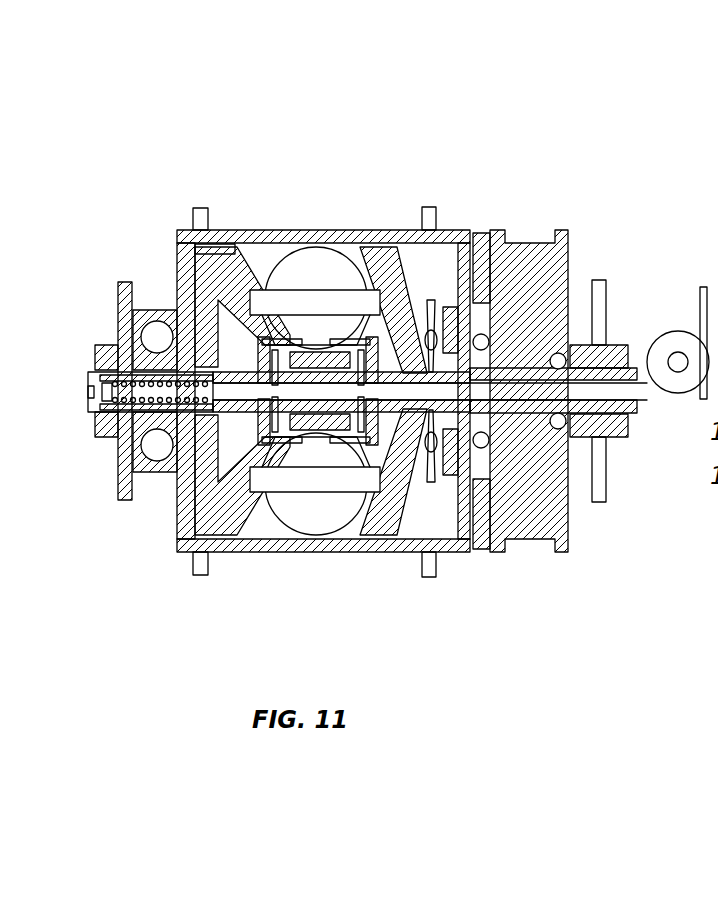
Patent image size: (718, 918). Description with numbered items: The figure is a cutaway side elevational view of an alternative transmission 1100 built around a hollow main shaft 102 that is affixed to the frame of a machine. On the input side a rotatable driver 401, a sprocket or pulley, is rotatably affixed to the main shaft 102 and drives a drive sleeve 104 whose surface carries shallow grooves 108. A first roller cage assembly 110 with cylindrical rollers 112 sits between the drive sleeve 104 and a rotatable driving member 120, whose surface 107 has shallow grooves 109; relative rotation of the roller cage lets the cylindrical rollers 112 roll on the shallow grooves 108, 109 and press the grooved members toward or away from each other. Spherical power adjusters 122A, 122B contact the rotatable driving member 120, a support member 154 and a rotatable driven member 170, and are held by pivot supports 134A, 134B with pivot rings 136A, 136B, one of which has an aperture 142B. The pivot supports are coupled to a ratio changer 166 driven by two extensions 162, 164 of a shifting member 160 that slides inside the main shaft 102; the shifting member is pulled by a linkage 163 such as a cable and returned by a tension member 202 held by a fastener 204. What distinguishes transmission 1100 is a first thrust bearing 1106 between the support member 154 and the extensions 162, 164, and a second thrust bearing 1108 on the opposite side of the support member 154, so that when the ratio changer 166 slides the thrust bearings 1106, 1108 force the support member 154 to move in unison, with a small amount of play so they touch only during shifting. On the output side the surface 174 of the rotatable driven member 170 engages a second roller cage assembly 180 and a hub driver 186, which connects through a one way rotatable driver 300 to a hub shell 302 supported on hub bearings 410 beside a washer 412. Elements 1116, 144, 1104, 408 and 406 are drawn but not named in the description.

The transmission 1100 is at (232, 118).
The rotatable driving member 120 is at (400, 240).
The one way rotatable driver 300 is at (200, 250).
The hub shell 302 is at (306, 248).
The rotatable driver 401 is at (540, 243).
The seal 1116 is at (466, 250).
The shallow grooves 109 is at (476, 335).
The wedge 144 is at (378, 262).
The surface 107 is at (432, 300).
The second thrust bearing 1108 is at (445, 310).
The rotatable driven member 170 is at (270, 270).
The spherical power adjuster 122A is at (335, 275).
The spherical power adjuster 122B is at (305, 495).
The pivot support 134A is at (252, 300).
The pivot support 134B is at (275, 480).
The pivot ring 136A is at (286, 310).
The pivot ring 136B is at (350, 480).
The aperture 142B is at (318, 490).
The first thrust bearing 1106 is at (300, 352).
The first roller cage assembly 110 is at (470, 545).
The fastener 204 is at (102, 392).
The tension member 202 is at (97, 428).
The hollow main shaft 102 is at (120, 305).
The hub driver 186 is at (125, 340).
The extension 162 is at (155, 330).
The extension 164 is at (157, 312).
The hub bearings 410 is at (135, 320).
The washer 412 is at (150, 445).
The shifting member 160 is at (130, 455).
The second roller cage assembly 180 is at (190, 480).
The shallow grooves 108 is at (195, 553).
The surface 174 is at (240, 548).
The ratio changer 166 is at (265, 535).
The bottom plate 1104 is at (392, 540).
The support member 154 is at (448, 540).
The drive sleeve 104 is at (500, 510).
The ball bearing 408 is at (560, 430).
The bearing block 406 is at (595, 440).
The cylindrical rollers 112 is at (566, 260).
The linkage 163 is at (700, 323).